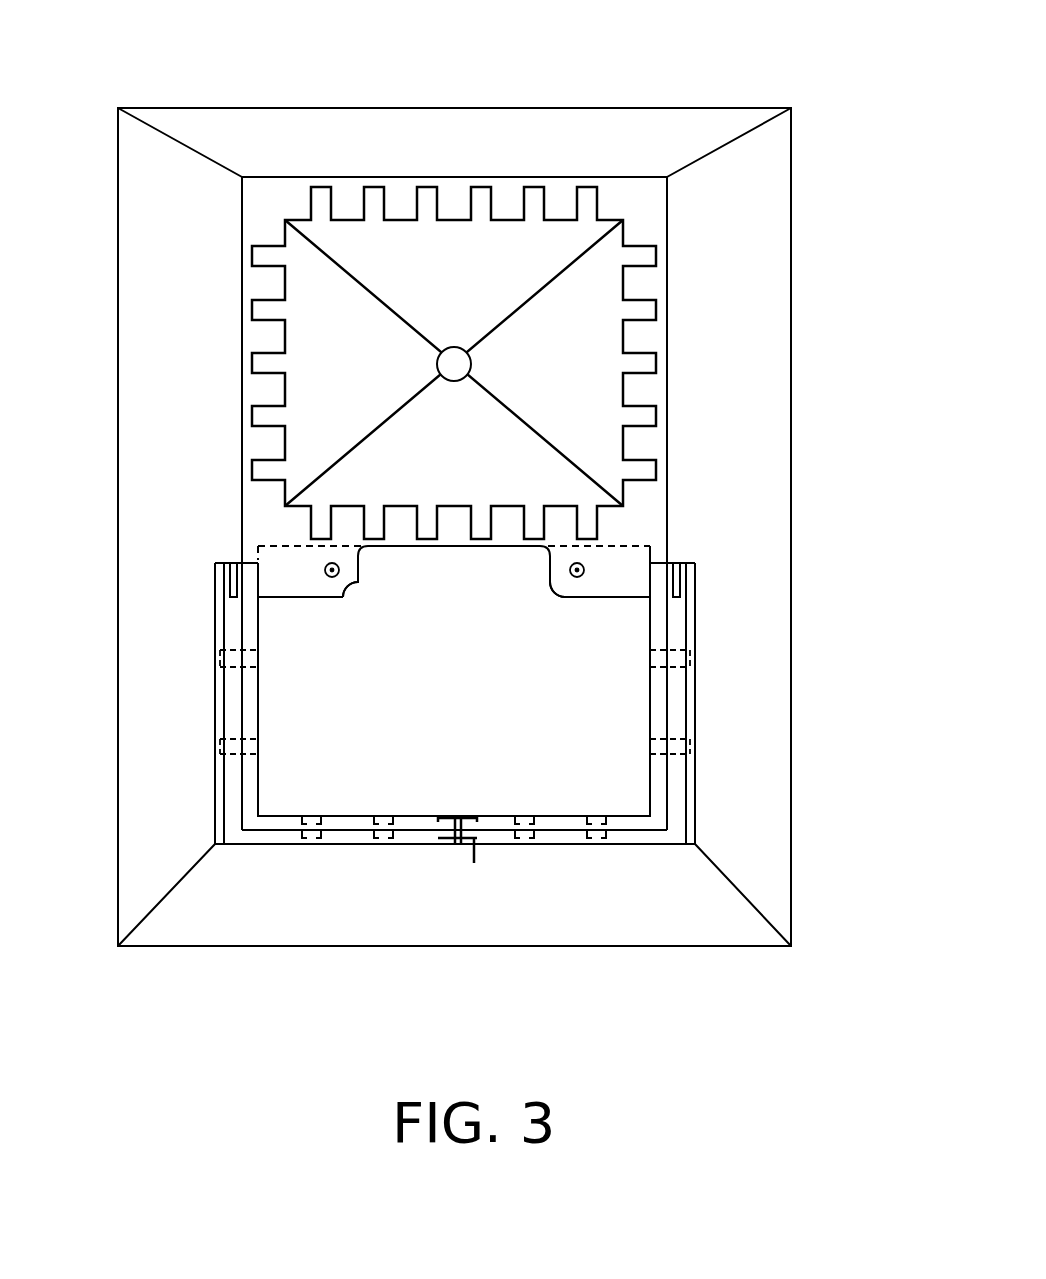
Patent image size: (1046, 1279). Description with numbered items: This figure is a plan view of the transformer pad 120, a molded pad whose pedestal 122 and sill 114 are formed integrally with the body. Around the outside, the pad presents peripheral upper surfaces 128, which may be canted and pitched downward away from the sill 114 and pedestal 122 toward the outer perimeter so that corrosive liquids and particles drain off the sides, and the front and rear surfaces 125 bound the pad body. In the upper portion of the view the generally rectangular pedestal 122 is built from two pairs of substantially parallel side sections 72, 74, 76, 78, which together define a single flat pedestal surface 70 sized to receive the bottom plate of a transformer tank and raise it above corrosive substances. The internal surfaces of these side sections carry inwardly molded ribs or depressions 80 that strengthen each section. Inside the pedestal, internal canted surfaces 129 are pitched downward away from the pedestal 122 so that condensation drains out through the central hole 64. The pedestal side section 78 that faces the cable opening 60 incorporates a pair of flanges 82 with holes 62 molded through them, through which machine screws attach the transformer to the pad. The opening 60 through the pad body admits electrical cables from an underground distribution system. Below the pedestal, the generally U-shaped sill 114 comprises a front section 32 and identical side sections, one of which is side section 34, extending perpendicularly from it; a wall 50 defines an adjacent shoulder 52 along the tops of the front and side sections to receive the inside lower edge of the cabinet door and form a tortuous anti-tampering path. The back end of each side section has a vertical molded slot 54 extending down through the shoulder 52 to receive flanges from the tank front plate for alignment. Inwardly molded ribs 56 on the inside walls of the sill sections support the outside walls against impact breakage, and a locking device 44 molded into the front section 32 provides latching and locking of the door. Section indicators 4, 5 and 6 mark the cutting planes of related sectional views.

The transformer pad 120 is at (160, 108).
The peripheral top or upper surfaces 128 is at (232, 137).
The front and rear surfaces 125 is at (730, 948).
The pedestal surface 70 is at (262, 206).
The pedestal side section 74 is at (455, 177).
The pedestal side section 72 is at (240, 272).
The pedestal side section 76 is at (667, 230).
The pedestal 122 is at (667, 300).
The inwardly molded ribs or depressions 80 is at (260, 310).
The internal canted surfaces 129 is at (555, 240).
The hole 64 is at (475, 365).
The side section 34 is at (213, 808).
The shoulder 52 is at (228, 640).
The vertical molded slot 54 is at (233, 562).
The wall 50 is at (253, 708).
The opening 60 is at (615, 777).
The sill 114 is at (680, 830).
The front section 32 is at (556, 850).
The pedestal side section 78 is at (460, 547).
The flanges 82 is at (363, 588).
The holes 62 is at (332, 578).
The inwardly molded ribs 56 is at (255, 745).
The locking device 44 is at (457, 850).
The section line 5 is at (140, 367).
The section line 4 is at (140, 745).
The section line 6 is at (454, 130).